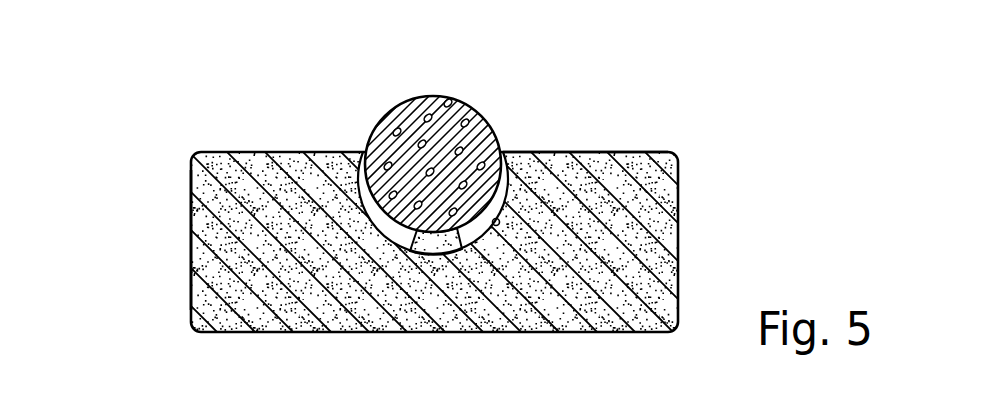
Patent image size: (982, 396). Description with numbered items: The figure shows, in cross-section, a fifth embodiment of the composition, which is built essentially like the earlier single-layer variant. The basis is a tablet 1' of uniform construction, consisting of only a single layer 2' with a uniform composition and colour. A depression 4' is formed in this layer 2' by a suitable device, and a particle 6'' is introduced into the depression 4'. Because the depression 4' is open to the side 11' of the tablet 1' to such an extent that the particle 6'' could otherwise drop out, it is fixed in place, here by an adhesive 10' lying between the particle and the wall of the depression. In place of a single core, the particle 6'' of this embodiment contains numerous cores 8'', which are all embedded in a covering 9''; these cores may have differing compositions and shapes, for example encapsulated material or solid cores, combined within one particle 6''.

The tablet 1' is at (128, 233).
The single layer 2' is at (412, 166).
The depression 4' is at (496, 174).
The particle 6'' is at (414, 130).
The cores 8'' is at (435, 123).
The covering 9'' is at (435, 139).
The adhesive 10' is at (372, 171).
The side of the tablet 11' is at (593, 121).